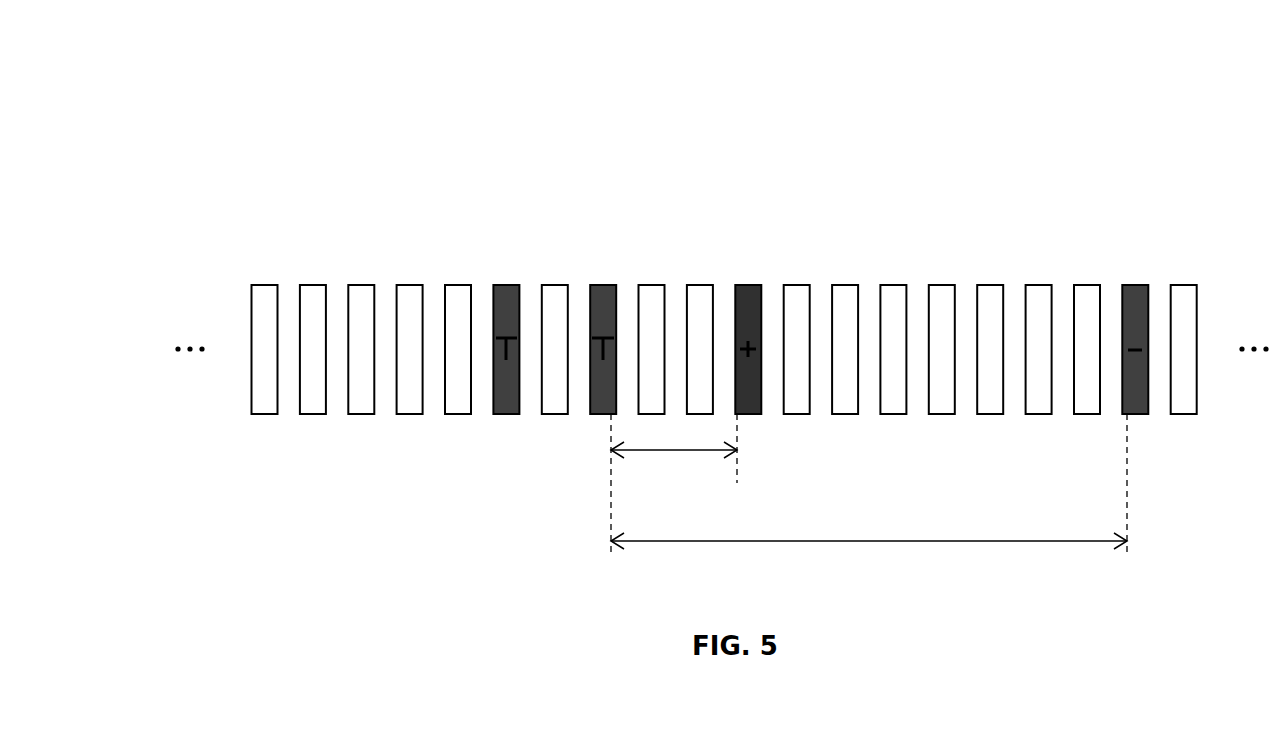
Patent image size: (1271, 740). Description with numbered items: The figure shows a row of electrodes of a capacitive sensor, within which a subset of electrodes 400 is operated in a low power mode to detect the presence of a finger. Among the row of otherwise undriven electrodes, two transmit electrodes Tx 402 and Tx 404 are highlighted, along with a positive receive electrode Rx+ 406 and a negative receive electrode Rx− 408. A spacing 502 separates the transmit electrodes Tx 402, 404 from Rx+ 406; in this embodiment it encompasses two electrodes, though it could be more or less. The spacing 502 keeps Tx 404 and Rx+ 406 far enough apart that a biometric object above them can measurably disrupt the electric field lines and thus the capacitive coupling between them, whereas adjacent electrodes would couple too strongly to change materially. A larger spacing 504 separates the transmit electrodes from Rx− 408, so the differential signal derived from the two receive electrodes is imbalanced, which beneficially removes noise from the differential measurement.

The subset of electrodes 400 is at (1074, 91).
The Tx electrode 402 is at (500, 284).
The Tx electrode 404 is at (596, 284).
The Rx+ electrode 406 is at (744, 284).
The Rx− electrode 408 is at (1132, 285).
The spacing 502 is at (674, 483).
The spacing 504 is at (869, 483).